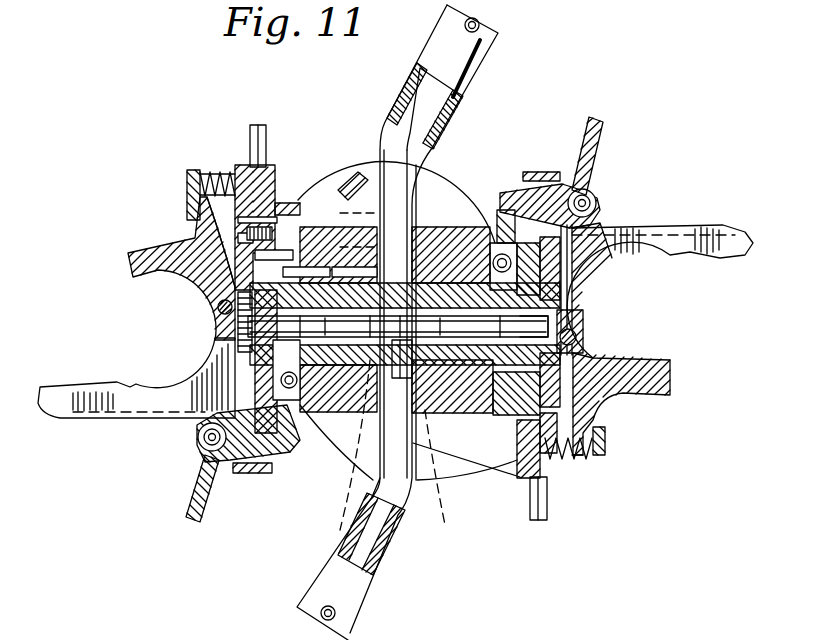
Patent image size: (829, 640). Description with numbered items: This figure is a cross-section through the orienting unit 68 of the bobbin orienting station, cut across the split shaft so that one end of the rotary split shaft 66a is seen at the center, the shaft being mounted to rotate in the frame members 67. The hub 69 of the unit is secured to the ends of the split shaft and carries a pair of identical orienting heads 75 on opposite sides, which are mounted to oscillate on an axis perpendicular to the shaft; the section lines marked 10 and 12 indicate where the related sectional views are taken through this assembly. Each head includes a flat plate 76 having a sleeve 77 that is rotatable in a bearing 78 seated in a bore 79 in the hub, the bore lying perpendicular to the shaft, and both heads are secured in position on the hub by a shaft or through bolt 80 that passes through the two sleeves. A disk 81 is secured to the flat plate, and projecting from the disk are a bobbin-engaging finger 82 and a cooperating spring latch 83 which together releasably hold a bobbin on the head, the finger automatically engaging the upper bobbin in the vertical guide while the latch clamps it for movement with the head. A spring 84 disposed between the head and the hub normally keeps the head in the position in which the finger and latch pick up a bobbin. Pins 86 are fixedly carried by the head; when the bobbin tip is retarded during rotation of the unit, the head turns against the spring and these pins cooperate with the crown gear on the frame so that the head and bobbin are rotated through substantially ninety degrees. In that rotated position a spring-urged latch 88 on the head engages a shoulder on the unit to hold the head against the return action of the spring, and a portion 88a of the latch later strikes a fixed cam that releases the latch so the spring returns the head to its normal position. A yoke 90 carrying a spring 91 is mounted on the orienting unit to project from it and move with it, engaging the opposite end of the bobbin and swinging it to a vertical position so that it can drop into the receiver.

The section line 10- 10 is at (283, 200).
The section line 12- 12 is at (402, 34).
The split shaft 66a is at (444, 470).
The frame members 67 is at (338, 540).
The orienting unit 68 is at (464, 440).
The hub 69 is at (345, 405).
The orienting heads 75 is at (638, 196).
The flat plate 76 is at (220, 362).
The sleeve 77 is at (474, 250).
The bearing 78 is at (462, 262).
The bore 79 is at (447, 240).
The through bolt 80 is at (522, 324).
The disk 81 is at (237, 250).
The bobbin-engaging finger 82 is at (78, 392).
The spring latch 83 is at (163, 283).
The spring 84 is at (505, 194).
The pins 86 is at (259, 118).
The spring-urged latch 88 is at (603, 171).
The latch portion 88a is at (601, 124).
The yoke 90 is at (482, 80).
The spring 91 is at (479, 26).